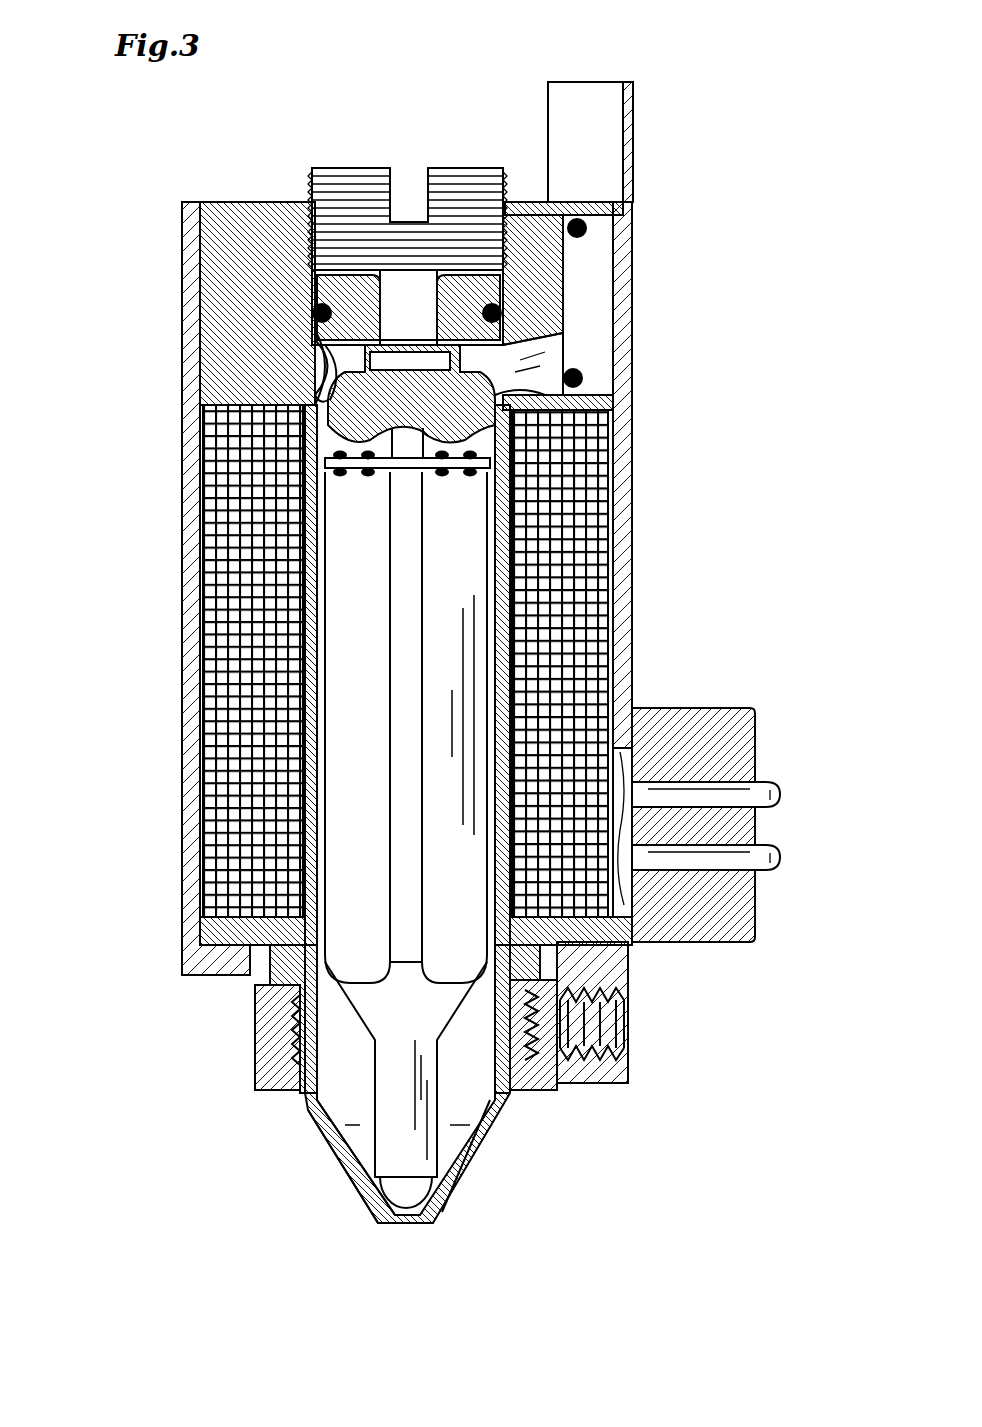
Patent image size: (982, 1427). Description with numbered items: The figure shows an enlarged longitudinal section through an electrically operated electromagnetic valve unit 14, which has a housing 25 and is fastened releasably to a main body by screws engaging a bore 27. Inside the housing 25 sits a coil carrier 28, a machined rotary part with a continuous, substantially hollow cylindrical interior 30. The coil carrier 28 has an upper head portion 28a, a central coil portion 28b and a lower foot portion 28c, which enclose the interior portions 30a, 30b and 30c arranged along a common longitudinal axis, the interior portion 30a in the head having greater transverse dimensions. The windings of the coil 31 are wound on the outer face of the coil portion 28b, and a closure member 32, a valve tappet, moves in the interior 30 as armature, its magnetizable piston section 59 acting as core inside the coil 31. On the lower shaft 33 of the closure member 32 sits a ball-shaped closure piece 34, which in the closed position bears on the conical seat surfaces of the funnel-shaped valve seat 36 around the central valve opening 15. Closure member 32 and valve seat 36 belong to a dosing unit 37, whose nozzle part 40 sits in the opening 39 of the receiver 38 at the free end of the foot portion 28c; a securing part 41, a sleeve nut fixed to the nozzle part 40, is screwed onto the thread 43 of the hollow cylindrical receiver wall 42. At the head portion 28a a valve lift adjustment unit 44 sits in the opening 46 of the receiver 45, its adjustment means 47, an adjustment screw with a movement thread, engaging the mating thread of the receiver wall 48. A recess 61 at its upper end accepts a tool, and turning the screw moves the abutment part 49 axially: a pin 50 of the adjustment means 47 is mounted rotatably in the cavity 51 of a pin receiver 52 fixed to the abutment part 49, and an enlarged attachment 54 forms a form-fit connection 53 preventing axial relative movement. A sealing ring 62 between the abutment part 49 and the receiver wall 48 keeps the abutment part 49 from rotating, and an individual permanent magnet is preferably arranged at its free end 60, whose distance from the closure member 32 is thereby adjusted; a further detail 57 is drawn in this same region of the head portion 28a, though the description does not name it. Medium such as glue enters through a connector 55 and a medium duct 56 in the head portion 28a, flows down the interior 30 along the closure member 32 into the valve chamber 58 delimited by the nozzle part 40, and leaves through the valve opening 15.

The valve unit 14 is at (738, 519).
The valve opening 15 is at (405, 1225).
The housing 25 is at (190, 640).
The bore 27 is at (590, 1050).
The coil carrier 28 is at (515, 625).
The head portion 28a is at (245, 245).
The coil portion 28b is at (300, 790).
The foot portion 28c is at (300, 1000).
The interior 30 is at (260, 850).
The interior portion 30a is at (315, 380).
The interior portion 30b is at (300, 650).
The interior portion 30c is at (300, 1080).
The coil 31 is at (575, 660).
The closure member 32 is at (455, 548).
The lower shaft 33 is at (410, 1015).
The closure piece 34 is at (440, 1145).
The valve seat 36 is at (470, 1148).
The dosing unit 37 is at (276, 1161).
The receiver 38 is at (300, 1085).
The opening 39 is at (510, 1110).
The nozzle part 40 is at (360, 1198).
The securing part 41 is at (290, 1038).
The receiver wall 42 is at (590, 1010).
The thread 43 is at (590, 1035).
The valve lift adjustment unit 44 is at (427, 194).
The receiver 45 is at (510, 197).
The opening 46 is at (320, 350).
The adjustment means 47 is at (470, 190).
The receiver wall 48 is at (320, 380).
The abutment part 49 is at (465, 445).
The pin 50 is at (400, 300).
The cavity 51 is at (495, 300).
The pin receiver 52 is at (500, 365).
The form-fit connection 53 is at (370, 425).
The attachment 54 is at (500, 380).
The connector 55 is at (625, 235).
The medium duct 56 is at (545, 345).
The sealing edge 57 is at (330, 400).
The valve chamber 58 is at (355, 1140).
The piston section 59 is at (452, 880).
The free end 60 is at (330, 465).
The recess 61 is at (410, 185).
The sealing ring 62 is at (310, 330).